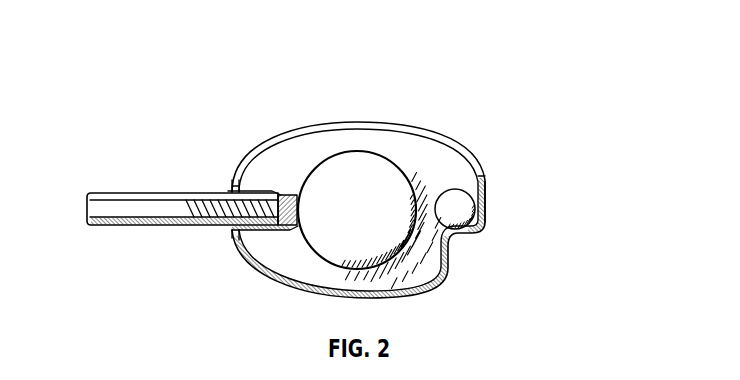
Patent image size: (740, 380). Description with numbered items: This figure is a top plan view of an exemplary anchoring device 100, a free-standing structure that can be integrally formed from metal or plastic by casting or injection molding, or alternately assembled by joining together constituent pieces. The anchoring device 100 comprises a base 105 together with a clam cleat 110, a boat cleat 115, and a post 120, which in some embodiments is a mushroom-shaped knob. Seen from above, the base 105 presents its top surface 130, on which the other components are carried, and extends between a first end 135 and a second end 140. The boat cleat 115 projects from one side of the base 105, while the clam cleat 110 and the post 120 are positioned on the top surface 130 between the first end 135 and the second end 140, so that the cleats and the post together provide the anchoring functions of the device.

The anchoring device 100 is at (498, 100).
The base 105 is at (277, 288).
The clam cleat 110 is at (374, 151).
The boat cleat 115 is at (173, 192).
The post 120 is at (478, 172).
The top surface 130 is at (332, 135).
The first end 135 is at (205, 237).
The second end 140 is at (497, 212).